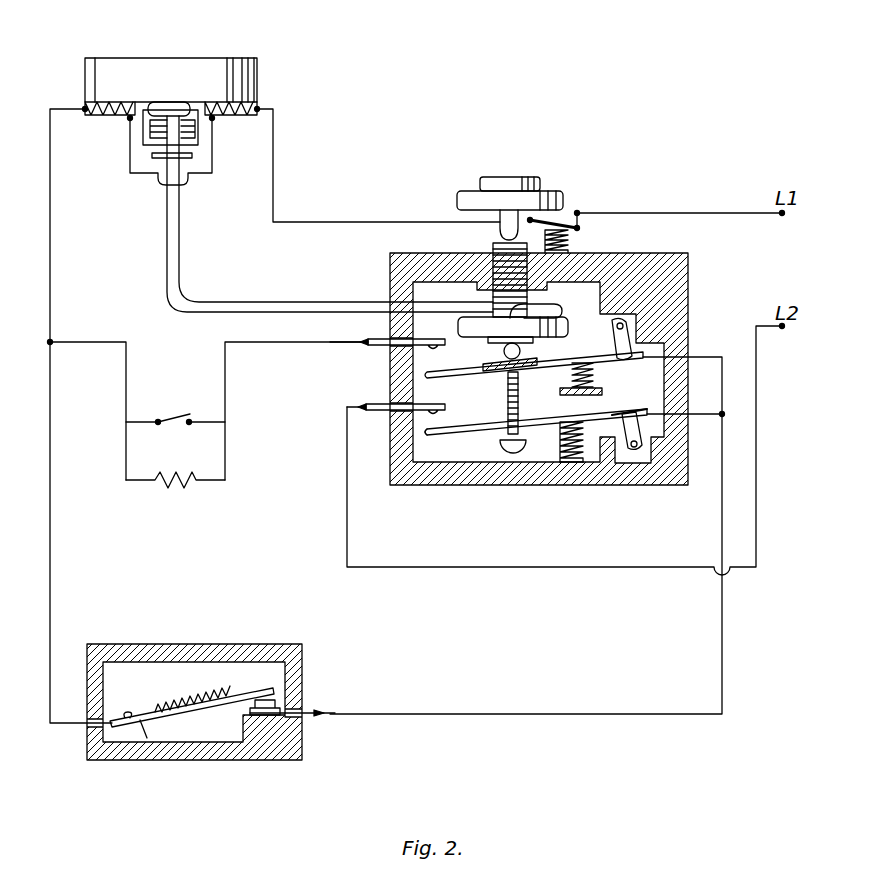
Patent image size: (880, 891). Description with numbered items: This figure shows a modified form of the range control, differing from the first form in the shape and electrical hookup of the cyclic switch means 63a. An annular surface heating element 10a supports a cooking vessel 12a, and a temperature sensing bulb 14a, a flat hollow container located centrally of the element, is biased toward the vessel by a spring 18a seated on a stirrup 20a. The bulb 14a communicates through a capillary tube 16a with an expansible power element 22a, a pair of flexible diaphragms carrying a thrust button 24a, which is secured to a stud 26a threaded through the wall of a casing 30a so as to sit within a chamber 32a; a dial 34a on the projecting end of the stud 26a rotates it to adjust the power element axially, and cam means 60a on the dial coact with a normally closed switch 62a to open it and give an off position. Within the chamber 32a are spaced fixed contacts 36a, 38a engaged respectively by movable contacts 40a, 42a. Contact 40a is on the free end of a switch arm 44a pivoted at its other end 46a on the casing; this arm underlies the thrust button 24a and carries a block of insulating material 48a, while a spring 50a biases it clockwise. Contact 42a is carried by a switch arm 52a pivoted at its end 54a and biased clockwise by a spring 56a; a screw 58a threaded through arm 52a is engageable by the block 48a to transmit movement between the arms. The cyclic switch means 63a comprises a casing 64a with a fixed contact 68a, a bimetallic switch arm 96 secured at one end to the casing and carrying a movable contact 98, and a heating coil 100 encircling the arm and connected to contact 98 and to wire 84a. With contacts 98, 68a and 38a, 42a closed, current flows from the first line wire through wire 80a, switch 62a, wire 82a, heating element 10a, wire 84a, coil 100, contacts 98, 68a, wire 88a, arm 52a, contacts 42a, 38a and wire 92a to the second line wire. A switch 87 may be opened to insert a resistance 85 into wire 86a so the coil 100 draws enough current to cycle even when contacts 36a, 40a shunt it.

The surface heating element 10a is at (236, 118).
The cooking vessel 12a is at (213, 68).
The temperature sensing bulb 14a is at (176, 103).
The capillary tube 16a is at (236, 302).
The spring 18a is at (150, 126).
The stirrup 20a is at (145, 142).
The expansible power element 22a is at (560, 312).
The thrust button 24a is at (525, 346).
The stud 26a is at (493, 250).
The casing 30a is at (688, 280).
The chamber 32a is at (559, 429).
The dial 34a is at (512, 180).
The fixed contact 36a is at (450, 328).
The fixed contact 38a is at (400, 410).
The movable contact 40a is at (427, 374).
The movable contact 42a is at (427, 434).
The switch arm 44a is at (513, 400).
The pivoted end 46a is at (640, 330).
The block of insulating material 48a is at (500, 362).
The spring 50a is at (594, 374).
The switch arm 52a is at (610, 414).
The pivoted end 54a is at (634, 452).
The spring 56a is at (565, 463).
The screw 58a is at (508, 418).
The cam means 60a is at (560, 212).
The normally closed switch 62a is at (572, 228).
The cyclic switch means 63a is at (194, 681).
The casing 64a is at (263, 645).
The fixed contact 68a is at (302, 696).
The wire 80a is at (735, 212).
The wire 82a is at (274, 163).
The wire 84a is at (50, 262).
The resistance 85 is at (186, 482).
The wire 86a is at (98, 342).
The switch 87 is at (168, 418).
The wire 88a is at (636, 712).
The wire 92a is at (552, 567).
The bimetallic switch arm 96 is at (138, 715).
The movable contact 98 is at (268, 700).
The heating coil 100 is at (176, 706).